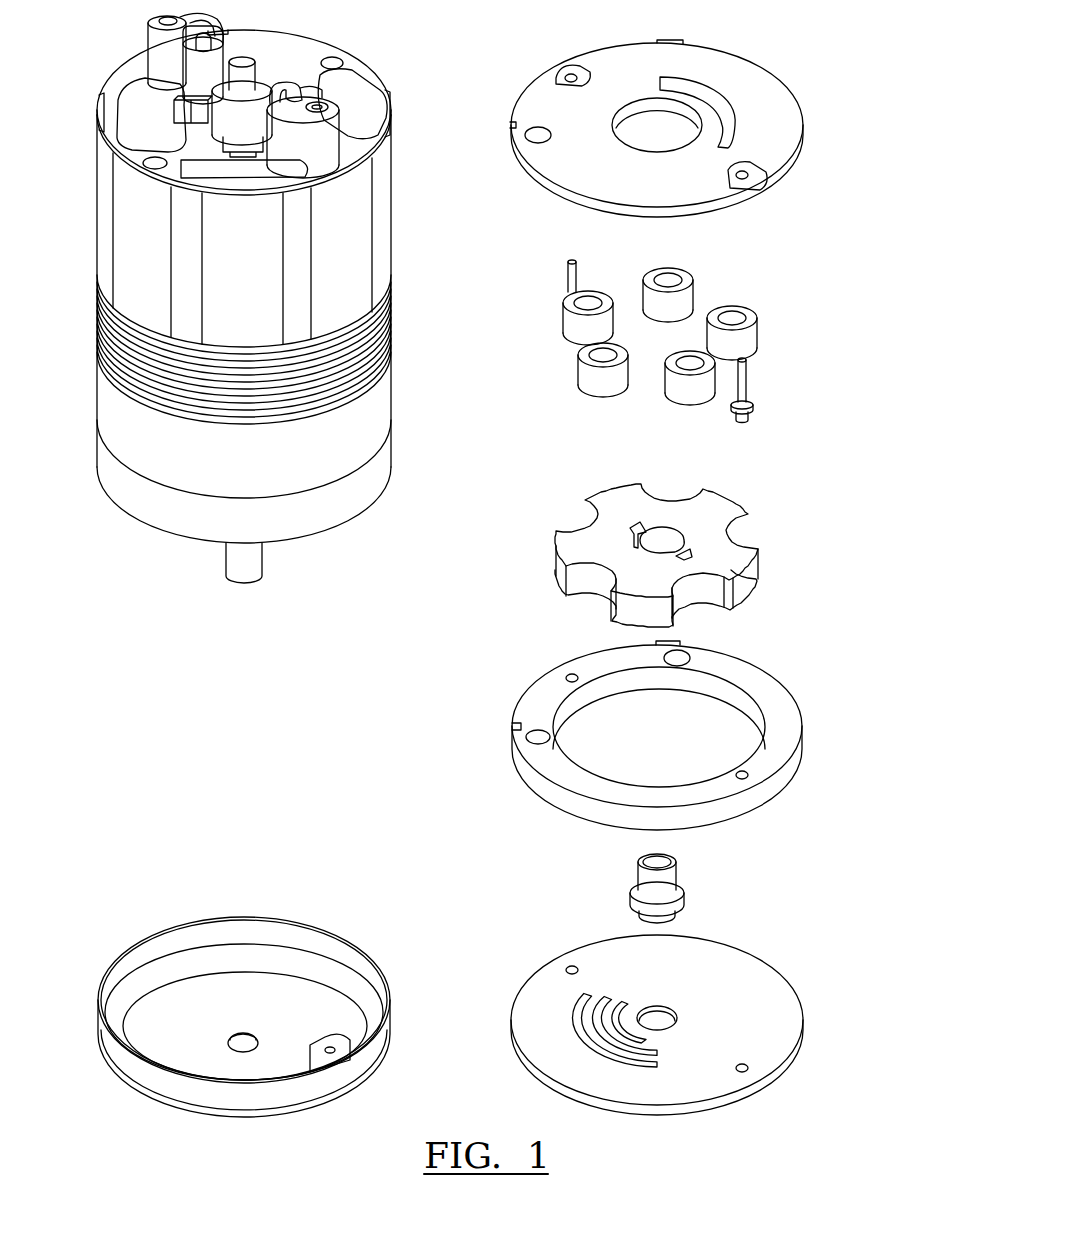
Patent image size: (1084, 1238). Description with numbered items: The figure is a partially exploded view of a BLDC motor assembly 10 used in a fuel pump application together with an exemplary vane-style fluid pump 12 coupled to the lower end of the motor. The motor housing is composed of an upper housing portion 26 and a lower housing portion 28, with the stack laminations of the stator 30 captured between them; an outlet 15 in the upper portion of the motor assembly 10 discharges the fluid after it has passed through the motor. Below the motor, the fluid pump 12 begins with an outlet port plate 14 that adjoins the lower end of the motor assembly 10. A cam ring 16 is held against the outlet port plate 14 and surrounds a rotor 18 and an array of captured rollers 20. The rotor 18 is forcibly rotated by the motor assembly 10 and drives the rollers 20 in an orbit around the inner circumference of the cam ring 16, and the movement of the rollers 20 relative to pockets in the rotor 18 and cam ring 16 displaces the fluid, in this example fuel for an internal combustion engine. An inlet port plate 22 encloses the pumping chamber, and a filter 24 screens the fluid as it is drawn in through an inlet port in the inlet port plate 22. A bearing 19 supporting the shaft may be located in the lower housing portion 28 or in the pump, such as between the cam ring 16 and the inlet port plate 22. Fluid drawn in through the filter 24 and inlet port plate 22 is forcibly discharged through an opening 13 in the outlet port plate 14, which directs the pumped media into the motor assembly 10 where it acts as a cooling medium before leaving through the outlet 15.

The motor assembly 10 is at (410, 252).
The fluid pump 12 is at (797, 22).
The opening 13 is at (692, 82).
The outlet port plate 14 is at (788, 175).
The outlet 15 is at (173, 110).
The cam ring 16 is at (752, 665).
The rotor 18 is at (752, 522).
The bearing 19 is at (685, 885).
The rollers 20 is at (694, 280).
The inlet port plate 22 is at (769, 963).
The filter 24 is at (388, 986).
The upper housing portion 26 is at (373, 192).
The lower housing portion 28 is at (370, 480).
The stator 30 is at (92, 408).